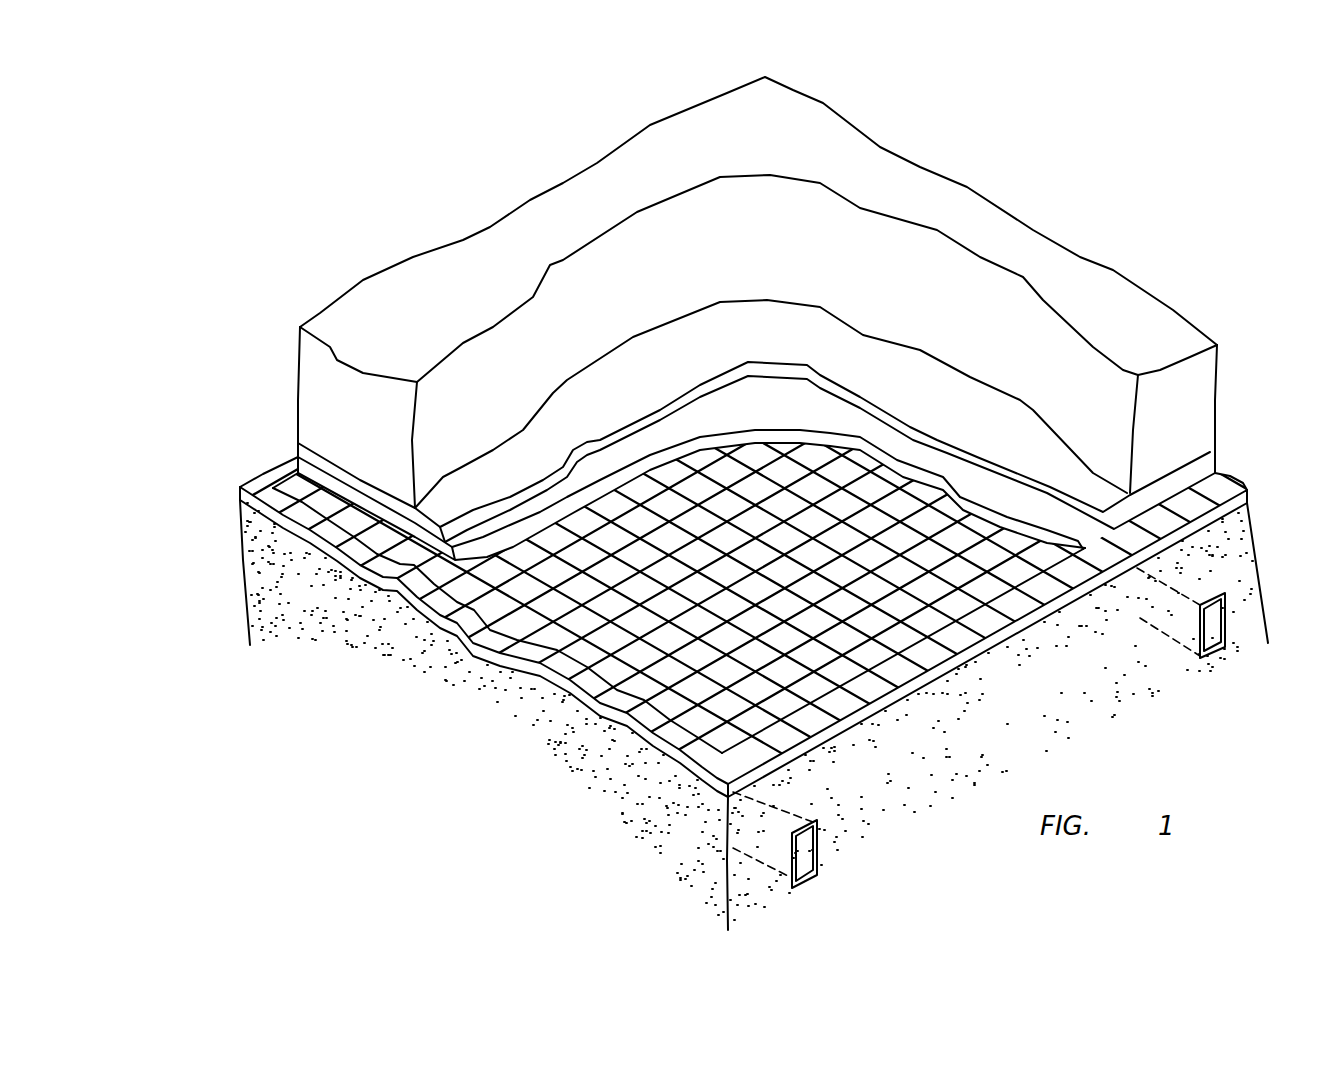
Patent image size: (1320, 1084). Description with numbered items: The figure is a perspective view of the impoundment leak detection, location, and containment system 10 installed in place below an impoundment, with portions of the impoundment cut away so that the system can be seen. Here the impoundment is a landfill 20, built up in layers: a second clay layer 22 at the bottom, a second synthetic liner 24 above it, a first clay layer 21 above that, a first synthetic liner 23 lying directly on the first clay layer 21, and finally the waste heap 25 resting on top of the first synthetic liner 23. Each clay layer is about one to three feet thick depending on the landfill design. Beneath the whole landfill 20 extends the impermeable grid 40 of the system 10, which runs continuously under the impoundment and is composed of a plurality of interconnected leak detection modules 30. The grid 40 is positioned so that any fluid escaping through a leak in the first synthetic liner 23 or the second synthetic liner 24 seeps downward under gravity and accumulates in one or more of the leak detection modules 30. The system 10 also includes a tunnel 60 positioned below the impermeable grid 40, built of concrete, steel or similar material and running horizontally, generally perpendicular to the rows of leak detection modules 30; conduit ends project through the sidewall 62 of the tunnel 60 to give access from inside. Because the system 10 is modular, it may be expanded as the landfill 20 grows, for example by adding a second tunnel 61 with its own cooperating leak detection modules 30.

The impoundment leak detection, location, and containment system 10 is at (520, 786).
The landfill 20 is at (757, 318).
The first clay layer 21 is at (822, 378).
The second clay layer 22 is at (833, 433).
The first synthetic liner 23 is at (935, 420).
The second synthetic liner 24 is at (726, 423).
The waste heap 25 is at (541, 210).
The leak detection module 30 is at (457, 638).
The impermeable grid 40 is at (240, 489).
The tunnel 60 is at (809, 853).
The second tunnel 61 is at (1222, 650).
The sidewall 62 is at (818, 850).